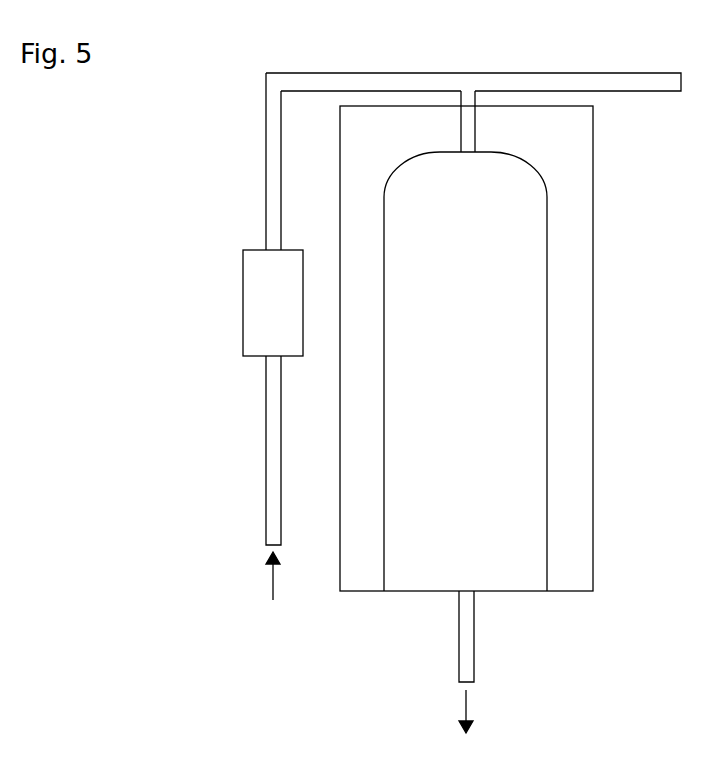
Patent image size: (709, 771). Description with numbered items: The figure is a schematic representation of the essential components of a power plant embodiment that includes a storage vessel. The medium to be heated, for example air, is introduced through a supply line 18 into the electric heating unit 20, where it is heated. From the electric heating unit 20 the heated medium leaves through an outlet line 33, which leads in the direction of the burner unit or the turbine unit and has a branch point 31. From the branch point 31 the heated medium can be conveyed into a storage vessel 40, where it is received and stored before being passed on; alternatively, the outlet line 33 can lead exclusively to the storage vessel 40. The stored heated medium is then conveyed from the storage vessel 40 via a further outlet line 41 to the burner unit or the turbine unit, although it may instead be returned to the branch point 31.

The supply line 18 is at (265, 478).
The electric heating unit 20 is at (281, 310).
The branch point 31 is at (461, 82).
The outlet line 33 is at (578, 75).
The storage vessel 40 is at (477, 361).
The further outlet line 41 is at (462, 646).